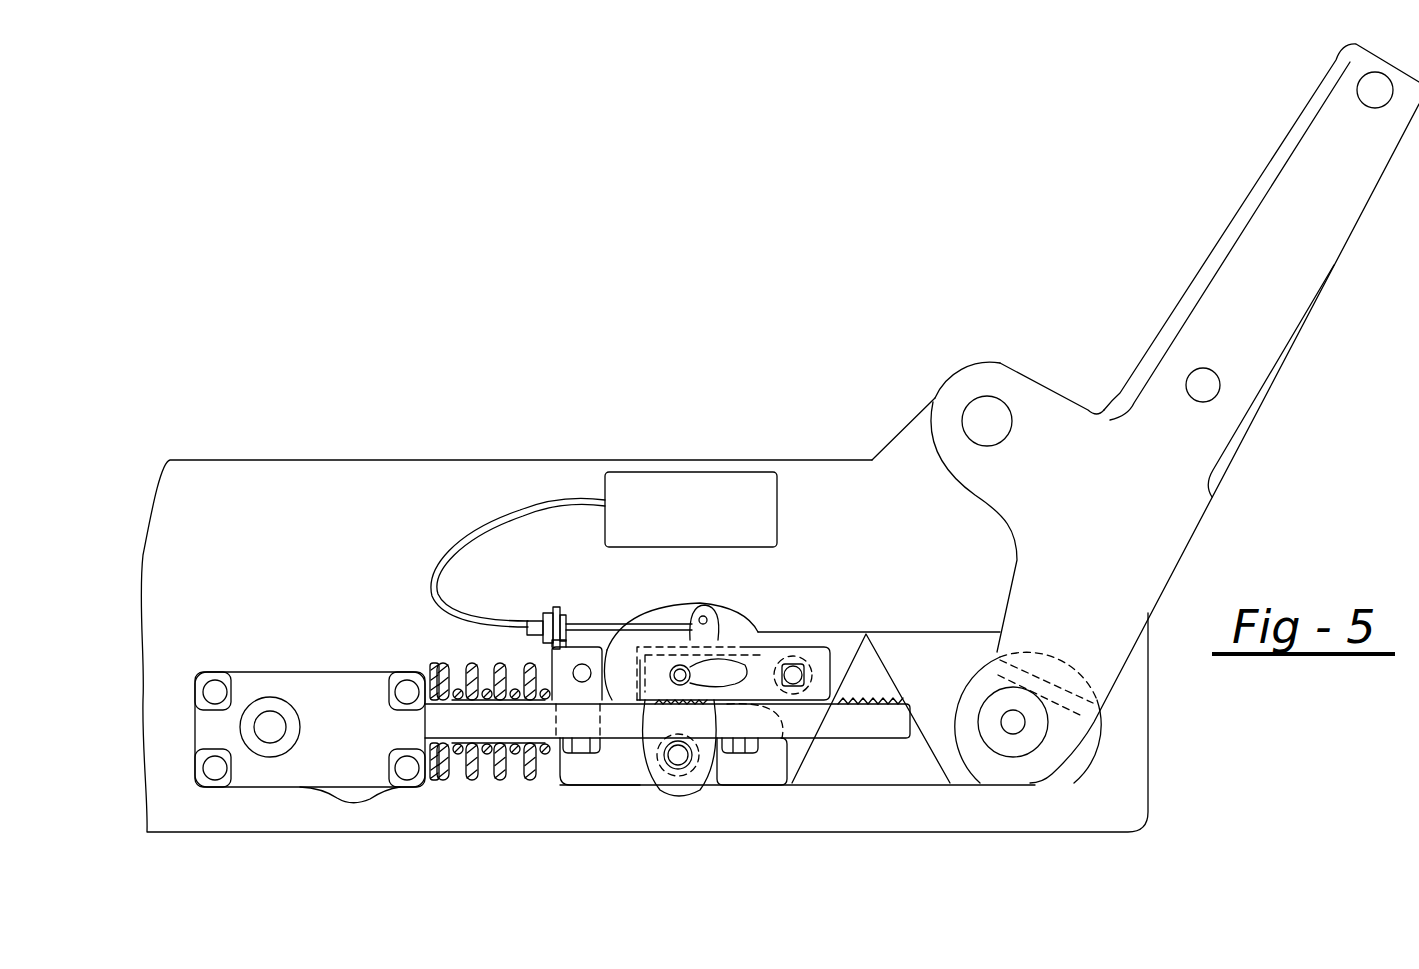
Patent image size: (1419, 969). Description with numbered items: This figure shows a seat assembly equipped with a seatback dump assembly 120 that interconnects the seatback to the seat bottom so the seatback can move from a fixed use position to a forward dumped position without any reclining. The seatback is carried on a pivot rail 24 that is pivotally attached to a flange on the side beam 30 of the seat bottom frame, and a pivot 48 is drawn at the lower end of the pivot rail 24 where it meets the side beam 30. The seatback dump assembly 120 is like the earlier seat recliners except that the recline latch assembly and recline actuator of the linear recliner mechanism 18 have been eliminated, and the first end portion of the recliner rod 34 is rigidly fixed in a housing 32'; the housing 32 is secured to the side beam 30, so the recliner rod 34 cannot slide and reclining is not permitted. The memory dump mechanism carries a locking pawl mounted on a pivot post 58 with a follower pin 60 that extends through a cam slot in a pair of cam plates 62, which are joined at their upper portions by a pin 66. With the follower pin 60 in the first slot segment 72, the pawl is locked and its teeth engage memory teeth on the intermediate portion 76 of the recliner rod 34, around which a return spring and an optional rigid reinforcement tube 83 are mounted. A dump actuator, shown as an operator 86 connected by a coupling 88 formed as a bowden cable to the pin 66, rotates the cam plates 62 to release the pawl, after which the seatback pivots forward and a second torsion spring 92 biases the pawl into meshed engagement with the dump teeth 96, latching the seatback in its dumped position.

The linear recliner mechanism 18 is at (252, 665).
The pivot rail 24 is at (1277, 207).
The side beam 30 is at (172, 810).
The housing 32 is at (310, 702).
The housing 32' is at (311, 792).
The recliner rod 34 is at (470, 780).
The pivot 48 is at (1015, 723).
The pivot post 58 is at (795, 660).
The follower pin 60 is at (680, 675).
The cam plates 62 is at (681, 783).
The pin 66 is at (706, 617).
The first slot segment 72 is at (690, 655).
The intermediate portion 76 is at (617, 645).
The rigid reinforcement tube 83 is at (535, 770).
The operator 86 is at (762, 490).
The coupling 88 is at (508, 516).
The second torsion spring 92 is at (795, 675).
The dump teeth 96 is at (865, 702).
The seatback dump assembly 120 is at (768, 340).